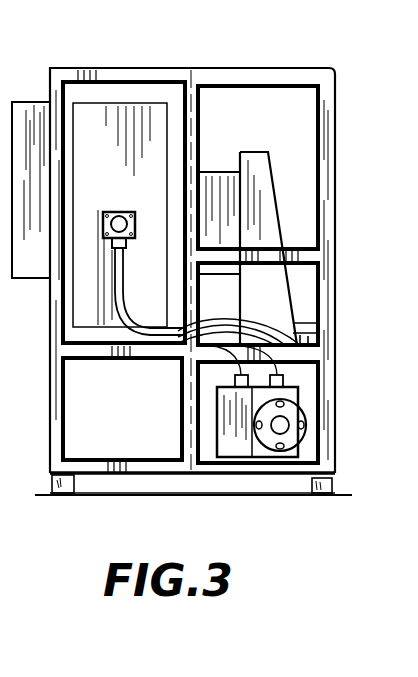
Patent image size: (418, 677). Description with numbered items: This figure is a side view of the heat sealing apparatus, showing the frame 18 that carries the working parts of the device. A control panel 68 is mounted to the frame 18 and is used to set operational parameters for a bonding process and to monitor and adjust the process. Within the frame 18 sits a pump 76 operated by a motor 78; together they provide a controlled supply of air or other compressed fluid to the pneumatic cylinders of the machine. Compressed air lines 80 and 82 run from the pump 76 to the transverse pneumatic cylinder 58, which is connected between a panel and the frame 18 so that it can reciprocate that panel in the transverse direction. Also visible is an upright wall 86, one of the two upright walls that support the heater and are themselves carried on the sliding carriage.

The frame 18 is at (244, 80).
The transverse pneumatic cylinder 58 is at (124, 212).
The control panel 68 is at (33, 260).
The pump 76 is at (243, 438).
The motor 78 is at (297, 418).
The compressed air line 80 is at (253, 333).
The compressed air line 82 is at (212, 343).
The upright wall 86 is at (260, 180).